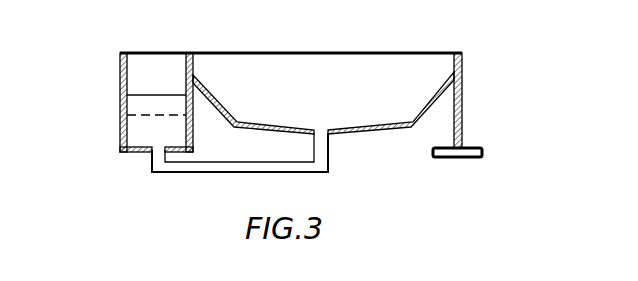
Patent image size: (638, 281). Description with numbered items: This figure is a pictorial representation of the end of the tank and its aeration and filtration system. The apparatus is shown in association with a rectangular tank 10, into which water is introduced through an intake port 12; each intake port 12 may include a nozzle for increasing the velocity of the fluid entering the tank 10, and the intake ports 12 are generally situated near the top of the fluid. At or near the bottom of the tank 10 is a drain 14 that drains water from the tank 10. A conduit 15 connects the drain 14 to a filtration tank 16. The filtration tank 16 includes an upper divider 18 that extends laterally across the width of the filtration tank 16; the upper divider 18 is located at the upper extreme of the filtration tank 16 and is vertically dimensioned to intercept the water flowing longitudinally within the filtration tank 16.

The tank 10 is at (464, 63).
The intake port 12 is at (140, 95).
The drain 14 is at (331, 130).
The conduit 15 is at (167, 172).
The filtration tank 16 is at (120, 66).
The upper divider 18 is at (122, 127).